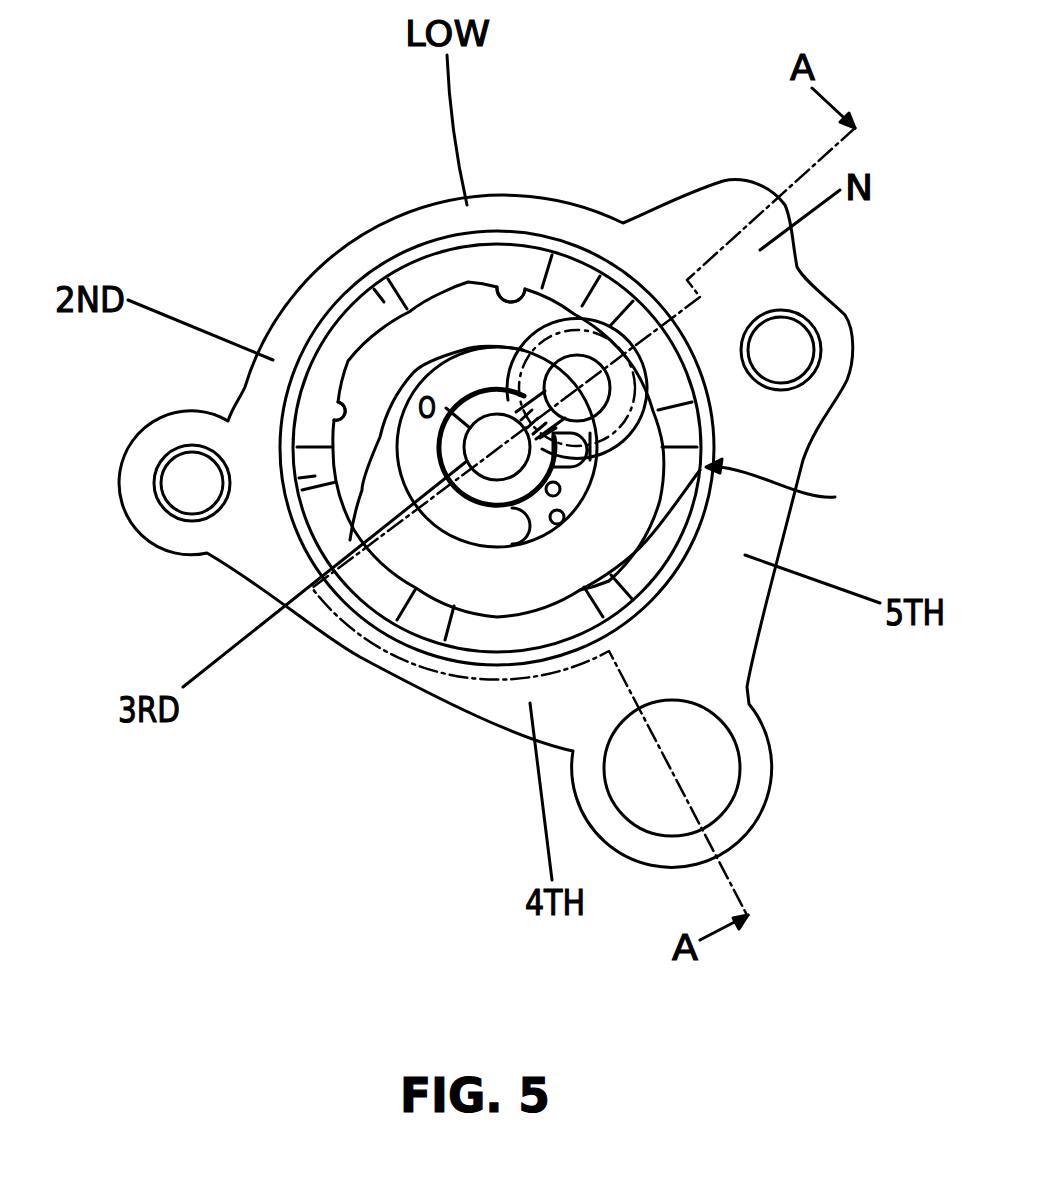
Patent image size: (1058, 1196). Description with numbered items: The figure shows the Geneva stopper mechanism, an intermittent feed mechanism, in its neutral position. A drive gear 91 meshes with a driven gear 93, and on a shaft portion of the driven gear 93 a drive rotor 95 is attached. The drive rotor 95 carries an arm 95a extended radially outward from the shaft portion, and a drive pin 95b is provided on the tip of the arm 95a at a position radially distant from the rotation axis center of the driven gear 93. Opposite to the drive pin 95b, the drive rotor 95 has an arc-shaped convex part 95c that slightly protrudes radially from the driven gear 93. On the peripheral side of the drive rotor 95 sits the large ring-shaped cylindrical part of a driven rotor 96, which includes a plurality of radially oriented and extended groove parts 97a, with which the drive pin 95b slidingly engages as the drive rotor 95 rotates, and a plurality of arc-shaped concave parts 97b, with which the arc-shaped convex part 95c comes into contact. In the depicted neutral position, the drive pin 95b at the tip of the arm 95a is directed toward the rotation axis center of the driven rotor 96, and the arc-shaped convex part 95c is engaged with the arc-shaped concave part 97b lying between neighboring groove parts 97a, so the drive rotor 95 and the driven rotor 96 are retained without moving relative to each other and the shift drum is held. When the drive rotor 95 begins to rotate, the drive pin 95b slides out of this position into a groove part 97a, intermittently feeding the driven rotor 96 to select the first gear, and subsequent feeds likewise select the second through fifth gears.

The drive gear 91 is at (478, 492).
The driven gear 93 is at (450, 476).
The drive rotor 95 is at (622, 457).
The arm 95a is at (520, 455).
The drive pin 95b is at (496, 445).
The arc-shaped convex part 95c is at (603, 325).
The driven rotor 96 is at (793, 488).
The groove part 97a is at (378, 302).
The arc-shaped concave part 97b is at (510, 283).